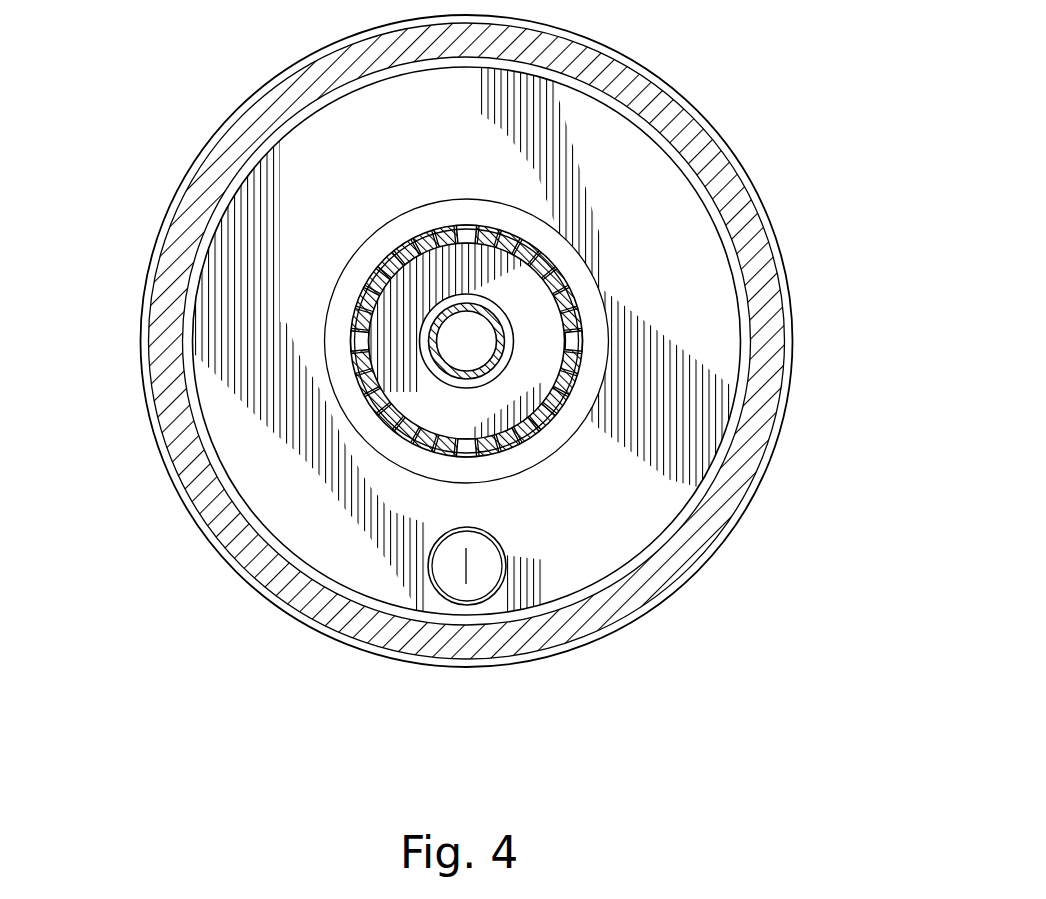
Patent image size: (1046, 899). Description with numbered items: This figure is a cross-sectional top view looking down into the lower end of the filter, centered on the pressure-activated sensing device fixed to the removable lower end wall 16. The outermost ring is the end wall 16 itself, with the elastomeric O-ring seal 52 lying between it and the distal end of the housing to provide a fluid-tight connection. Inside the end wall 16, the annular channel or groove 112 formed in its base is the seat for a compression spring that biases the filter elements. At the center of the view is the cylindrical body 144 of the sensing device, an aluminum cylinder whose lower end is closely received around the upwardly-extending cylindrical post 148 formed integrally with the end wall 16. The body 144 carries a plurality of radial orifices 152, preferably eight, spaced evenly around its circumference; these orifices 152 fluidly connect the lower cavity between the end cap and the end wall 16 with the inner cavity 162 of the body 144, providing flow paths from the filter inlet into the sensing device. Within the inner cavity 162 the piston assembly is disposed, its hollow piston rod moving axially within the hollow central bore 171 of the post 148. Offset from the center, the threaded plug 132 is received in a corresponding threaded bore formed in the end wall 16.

The second annular end wall 16 is at (773, 325).
The elastomeric O-ring seal 52 is at (731, 418).
The annular channel or groove 112 is at (547, 248).
The cylindrical body 144 is at (358, 303).
The radial orifices 152 is at (466, 238).
The cylindrical post 148 is at (494, 323).
The inner cavity 162 is at (414, 399).
The hollow central bore 171 is at (477, 343).
The threaded plug 132 is at (483, 578).